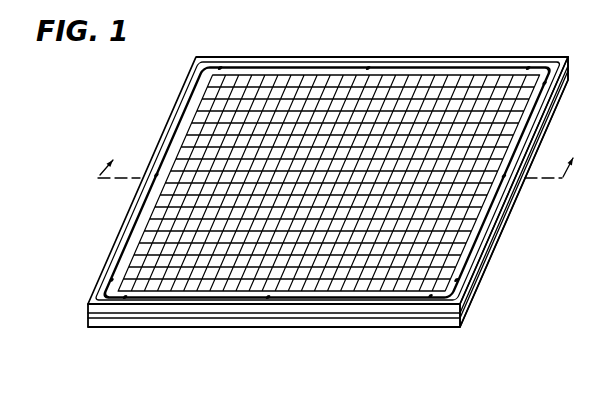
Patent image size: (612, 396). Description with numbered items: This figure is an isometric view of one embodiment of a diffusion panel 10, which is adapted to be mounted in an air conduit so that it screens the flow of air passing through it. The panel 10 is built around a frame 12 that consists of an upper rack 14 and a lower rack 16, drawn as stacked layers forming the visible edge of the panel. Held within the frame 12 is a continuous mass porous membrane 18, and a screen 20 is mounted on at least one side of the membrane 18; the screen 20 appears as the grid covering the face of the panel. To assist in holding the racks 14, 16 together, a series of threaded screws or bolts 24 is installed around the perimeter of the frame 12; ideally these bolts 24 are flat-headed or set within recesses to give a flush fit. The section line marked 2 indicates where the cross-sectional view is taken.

The diffusion panel 10 is at (347, 42).
The frame 12 is at (490, 249).
The upper rack 14 is at (88, 313).
The lower rack 16 is at (88, 323).
The continuous mass porous membrane 18 is at (237, 66).
The screen 20 is at (268, 75).
The bolts 24 is at (155, 173).
The section line 2- 2 is at (337, 155).